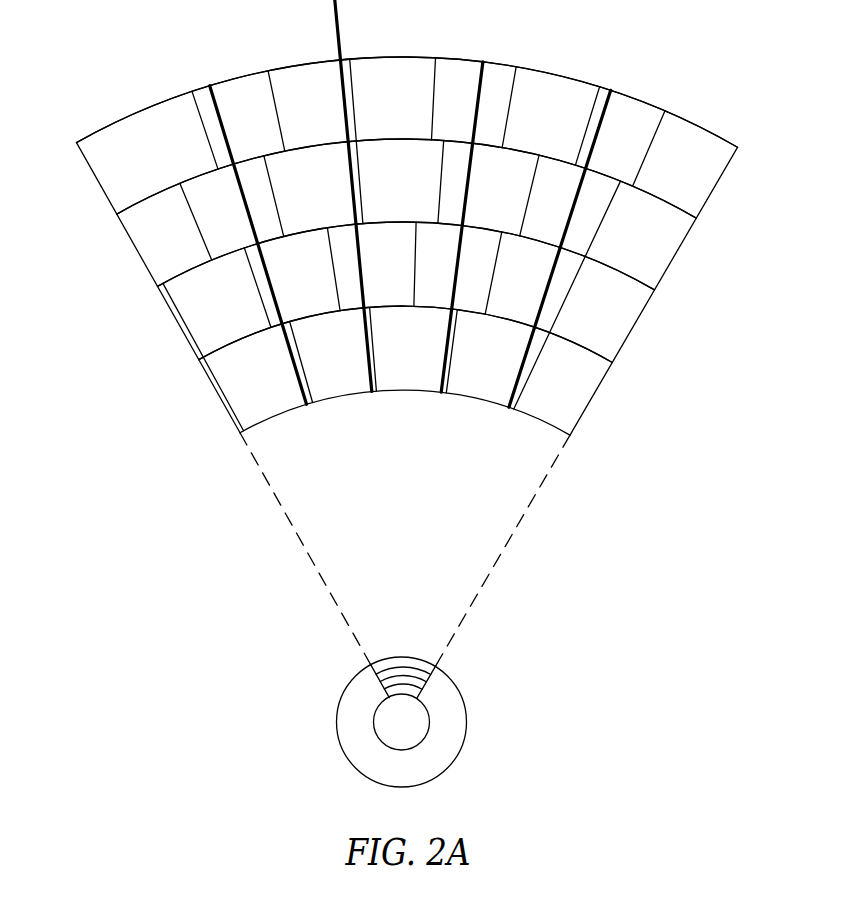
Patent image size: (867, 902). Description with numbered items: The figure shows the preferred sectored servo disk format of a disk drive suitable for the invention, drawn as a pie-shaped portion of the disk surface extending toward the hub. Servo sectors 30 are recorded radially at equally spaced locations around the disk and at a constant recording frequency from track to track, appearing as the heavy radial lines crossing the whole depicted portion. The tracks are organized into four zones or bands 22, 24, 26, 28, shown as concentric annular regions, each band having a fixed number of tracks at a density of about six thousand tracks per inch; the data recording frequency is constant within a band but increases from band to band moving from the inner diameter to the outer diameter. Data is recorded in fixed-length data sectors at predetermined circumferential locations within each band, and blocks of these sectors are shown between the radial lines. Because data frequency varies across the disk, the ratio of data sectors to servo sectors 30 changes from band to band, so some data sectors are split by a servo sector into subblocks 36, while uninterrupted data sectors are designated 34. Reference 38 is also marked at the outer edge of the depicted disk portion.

The band 22 is at (61, 153).
The band 24 is at (103, 225).
The band 26 is at (145, 296).
The band 28 is at (191, 370).
The servo sector 30 is at (207, 86).
The data sector 34 is at (147, 115).
The data subblock 36 is at (93, 140).
The disk surface 38 is at (745, 143).